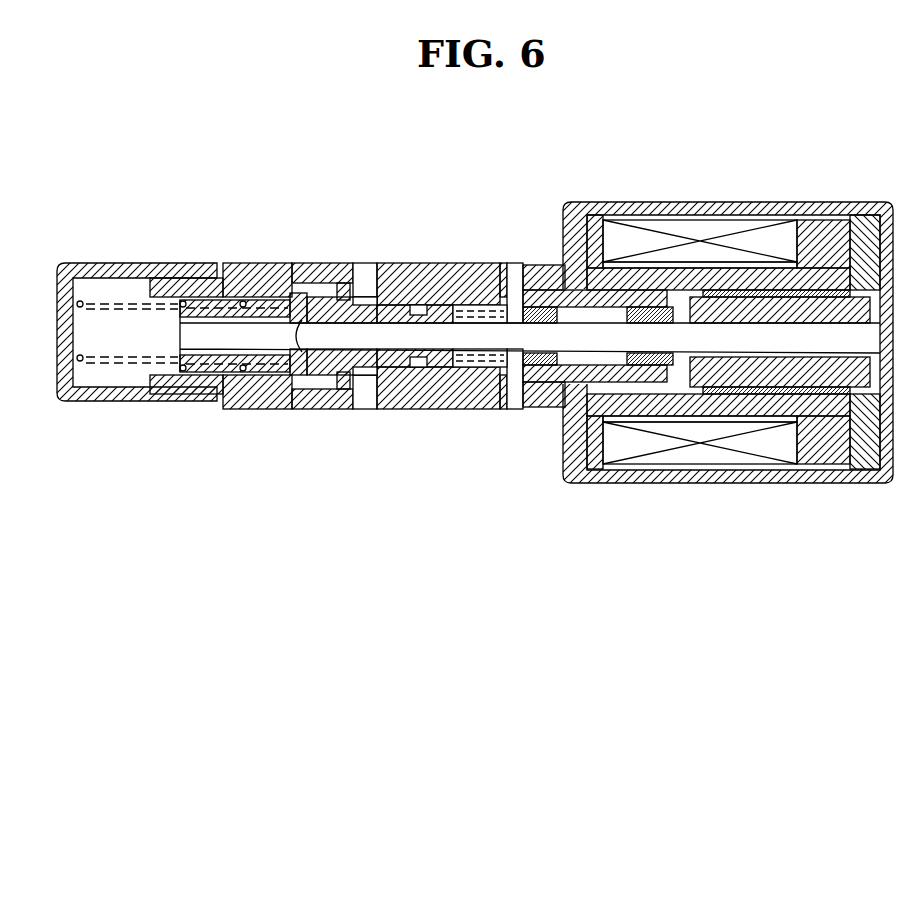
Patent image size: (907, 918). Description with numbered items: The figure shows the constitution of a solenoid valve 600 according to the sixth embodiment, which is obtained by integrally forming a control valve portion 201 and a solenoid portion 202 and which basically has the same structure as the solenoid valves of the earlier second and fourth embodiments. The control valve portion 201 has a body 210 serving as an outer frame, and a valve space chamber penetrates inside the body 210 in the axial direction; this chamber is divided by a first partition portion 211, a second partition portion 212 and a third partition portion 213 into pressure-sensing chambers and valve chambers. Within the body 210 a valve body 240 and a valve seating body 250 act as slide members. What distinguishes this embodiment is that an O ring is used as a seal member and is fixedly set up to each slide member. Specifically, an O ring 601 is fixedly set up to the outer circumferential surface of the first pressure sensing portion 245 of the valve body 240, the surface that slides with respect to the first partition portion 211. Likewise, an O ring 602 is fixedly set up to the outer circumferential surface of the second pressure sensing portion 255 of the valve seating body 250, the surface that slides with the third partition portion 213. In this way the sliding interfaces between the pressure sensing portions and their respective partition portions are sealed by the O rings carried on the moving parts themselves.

The solenoid valve 600 is at (657, 607).
The control valve portion 201 is at (470, 478).
The solenoid portion 202 is at (658, 488).
The body 210 is at (550, 265).
The first partition portion 211 is at (483, 265).
The second partition portion 212 is at (350, 265).
The third partition portion 213 is at (202, 263).
The valve body 240 is at (376, 390).
The first pressure sensing portion 245 is at (440, 385).
The valve seating body 250 is at (232, 367).
The second pressure sensing portion 255 is at (203, 370).
The O ring 601 is at (433, 265).
The O ring 602 is at (250, 265).